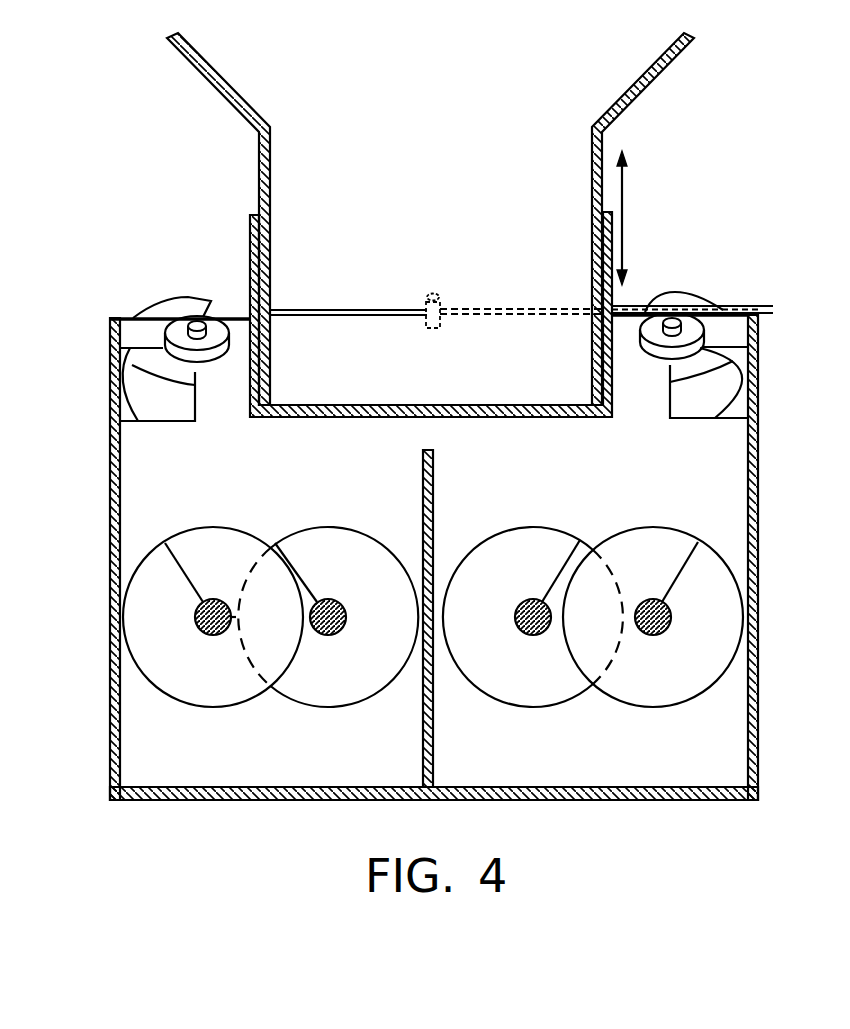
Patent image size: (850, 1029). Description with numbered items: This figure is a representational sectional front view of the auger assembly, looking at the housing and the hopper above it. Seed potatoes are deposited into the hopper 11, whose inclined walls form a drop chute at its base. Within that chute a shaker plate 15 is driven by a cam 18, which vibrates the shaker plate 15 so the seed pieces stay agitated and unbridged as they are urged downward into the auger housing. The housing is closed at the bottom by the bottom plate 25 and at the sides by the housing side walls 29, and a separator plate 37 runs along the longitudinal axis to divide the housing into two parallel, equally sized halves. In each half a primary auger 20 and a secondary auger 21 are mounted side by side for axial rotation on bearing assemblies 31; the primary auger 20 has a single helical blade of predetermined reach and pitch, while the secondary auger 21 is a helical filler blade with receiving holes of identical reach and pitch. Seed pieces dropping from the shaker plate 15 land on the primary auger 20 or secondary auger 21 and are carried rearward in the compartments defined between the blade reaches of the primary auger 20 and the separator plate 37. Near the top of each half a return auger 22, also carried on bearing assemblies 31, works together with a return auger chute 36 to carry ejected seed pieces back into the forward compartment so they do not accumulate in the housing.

The hopper 11 is at (635, 97).
The shaker plate 15 is at (250, 260).
The cam 18 is at (433, 298).
The primary auger 20 is at (333, 697).
The secondary auger 21 is at (223, 698).
The return auger 22 is at (157, 312).
The bottom plate 25 is at (653, 790).
The housing side walls 29 is at (116, 540).
The bearing assemblies 31 is at (209, 363).
The return auger chute 36 is at (140, 420).
The separator plate 37 is at (423, 723).